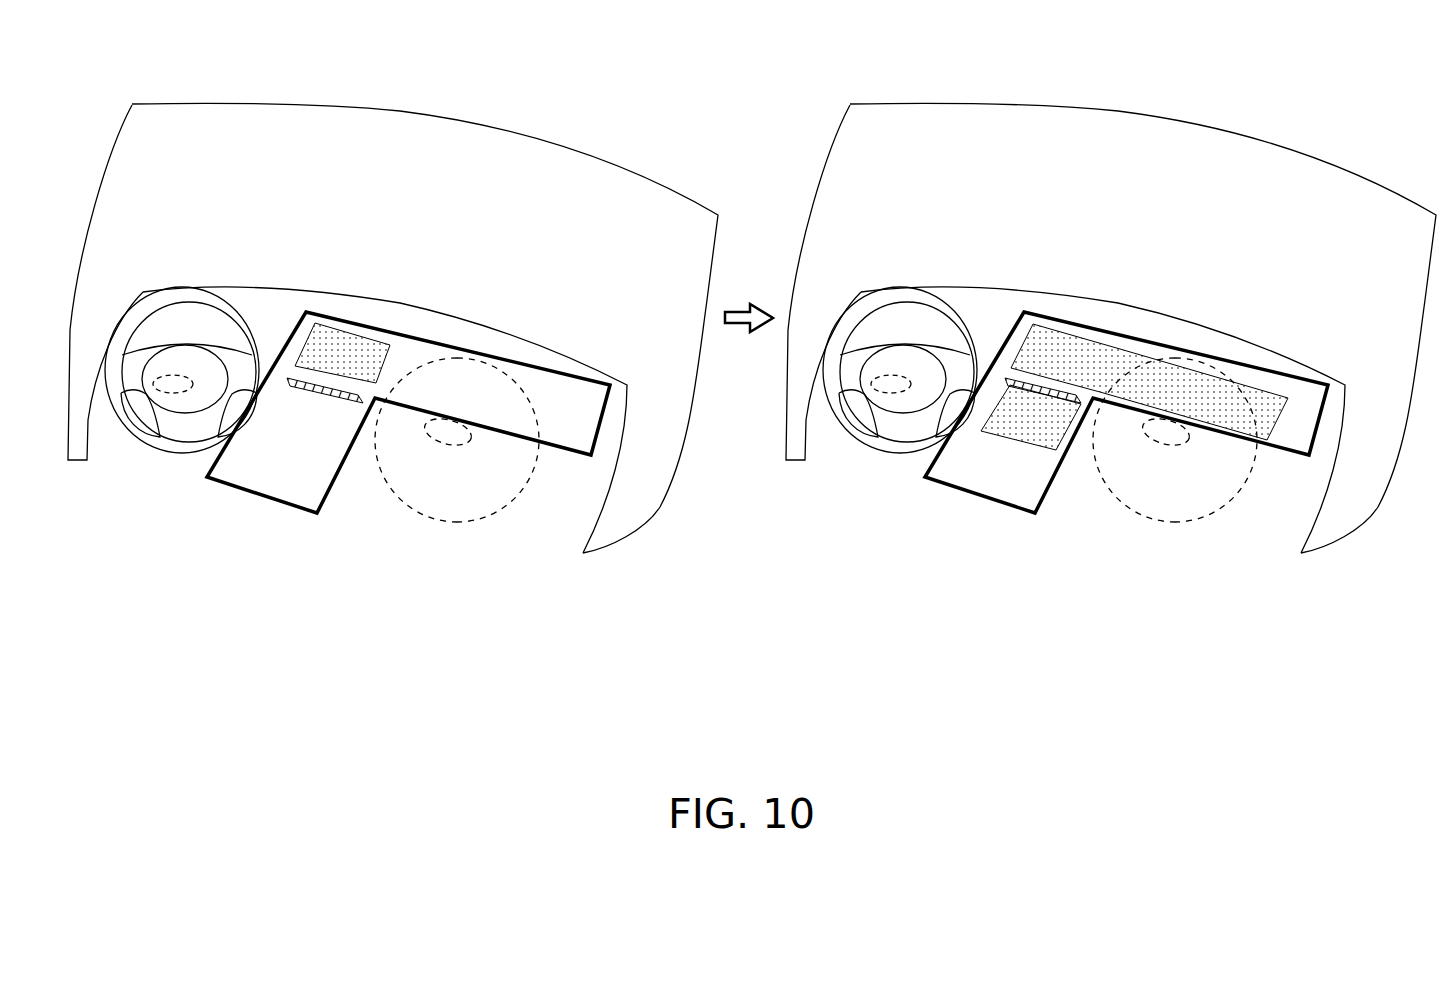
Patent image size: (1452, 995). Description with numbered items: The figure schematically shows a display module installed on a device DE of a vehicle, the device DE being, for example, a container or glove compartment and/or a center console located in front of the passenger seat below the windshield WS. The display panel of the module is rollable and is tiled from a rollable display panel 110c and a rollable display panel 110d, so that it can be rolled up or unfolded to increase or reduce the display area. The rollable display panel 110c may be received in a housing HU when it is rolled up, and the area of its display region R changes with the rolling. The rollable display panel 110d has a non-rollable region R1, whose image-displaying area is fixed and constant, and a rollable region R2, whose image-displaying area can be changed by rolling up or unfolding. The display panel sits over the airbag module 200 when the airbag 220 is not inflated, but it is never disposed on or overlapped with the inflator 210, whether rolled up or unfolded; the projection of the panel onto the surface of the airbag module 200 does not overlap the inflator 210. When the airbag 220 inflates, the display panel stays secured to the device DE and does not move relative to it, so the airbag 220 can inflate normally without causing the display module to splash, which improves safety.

The windshield WS is at (555, 170).
The device DE is at (561, 360).
The rollable display panel 110c is at (281, 362).
The rollable display panel 110d is at (350, 346).
The housing HU is at (323, 398).
The non-rollable region R1 is at (1078, 353).
The rollable region R2 is at (1132, 365).
The display region R is at (1010, 420).
The inflator 210 is at (437, 427).
The airbag 220 is at (478, 483).
The airbag module 200 is at (535, 528).